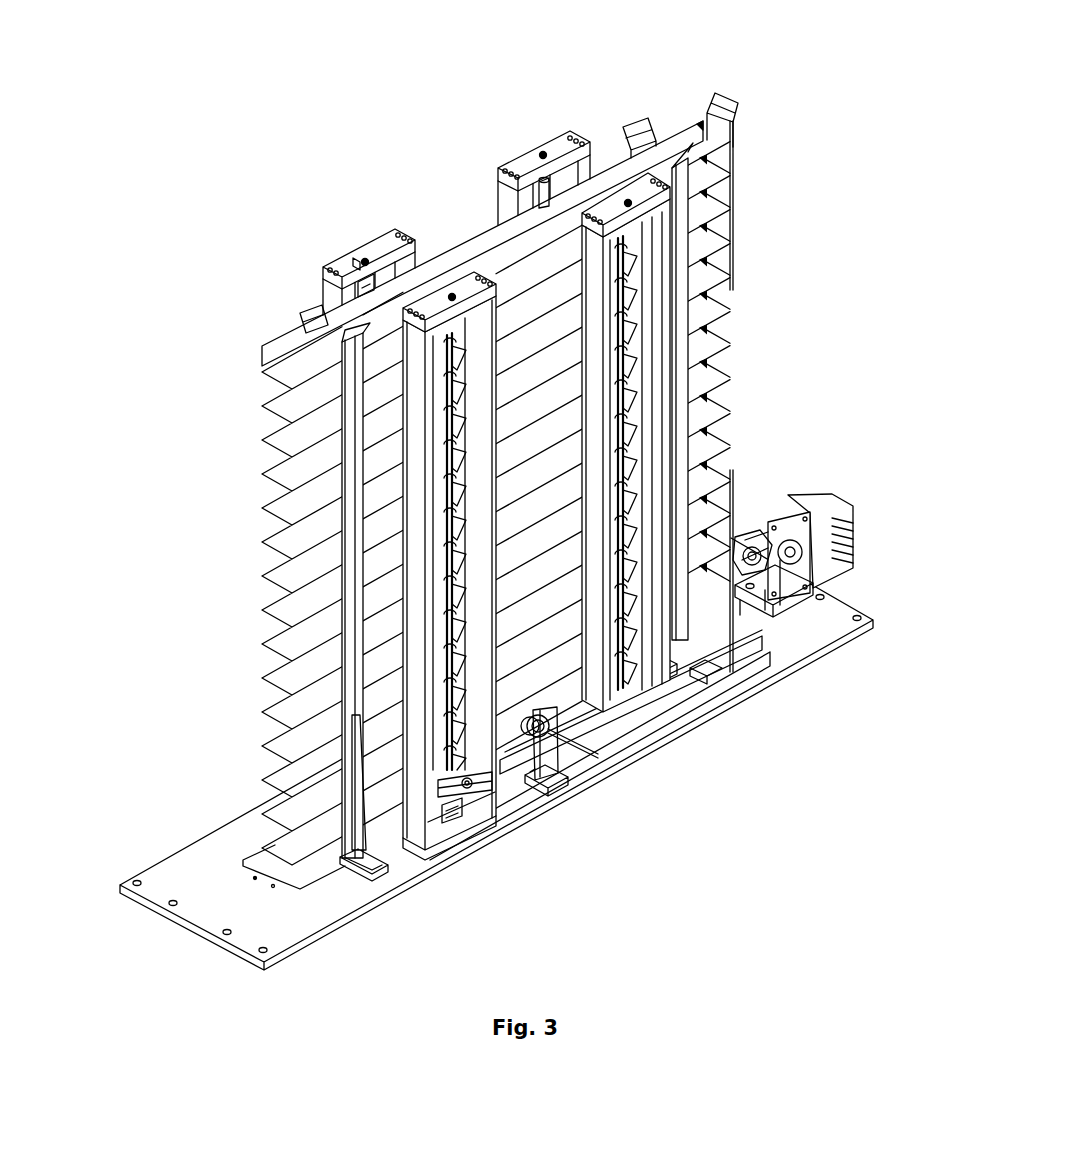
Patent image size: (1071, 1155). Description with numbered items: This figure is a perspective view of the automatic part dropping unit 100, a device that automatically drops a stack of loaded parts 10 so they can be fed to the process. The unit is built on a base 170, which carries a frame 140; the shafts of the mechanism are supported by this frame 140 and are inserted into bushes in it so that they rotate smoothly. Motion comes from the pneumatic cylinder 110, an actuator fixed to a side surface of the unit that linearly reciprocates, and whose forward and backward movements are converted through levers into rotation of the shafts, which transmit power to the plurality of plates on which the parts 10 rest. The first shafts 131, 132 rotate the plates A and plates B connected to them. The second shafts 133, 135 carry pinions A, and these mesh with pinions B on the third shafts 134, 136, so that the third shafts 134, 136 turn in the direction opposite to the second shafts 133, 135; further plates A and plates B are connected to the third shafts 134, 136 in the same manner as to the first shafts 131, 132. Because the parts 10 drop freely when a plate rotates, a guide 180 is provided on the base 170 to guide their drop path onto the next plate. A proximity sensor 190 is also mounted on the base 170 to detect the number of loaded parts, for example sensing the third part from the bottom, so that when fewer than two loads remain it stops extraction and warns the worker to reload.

The automatic part dropping unit 100 is at (806, 255).
The part 10 is at (293, 366).
The pneumatic cylinder 110 is at (813, 510).
The first shaft 131 is at (653, 662).
The first shaft 132 is at (542, 155).
The second shaft 133 is at (458, 818).
The third shaft 134 is at (467, 757).
The second shaft 135 is at (347, 297).
The third shaft 136 is at (370, 240).
The frame 140 is at (523, 167).
The base 170 is at (178, 866).
The guide 180 is at (640, 128).
The proximity sensor 190 is at (582, 778).